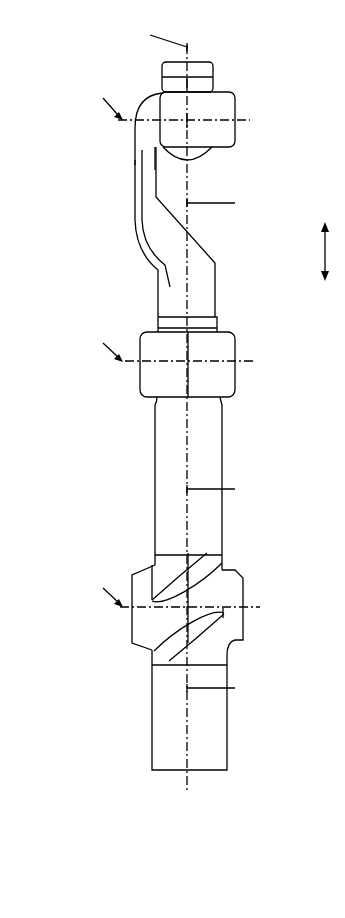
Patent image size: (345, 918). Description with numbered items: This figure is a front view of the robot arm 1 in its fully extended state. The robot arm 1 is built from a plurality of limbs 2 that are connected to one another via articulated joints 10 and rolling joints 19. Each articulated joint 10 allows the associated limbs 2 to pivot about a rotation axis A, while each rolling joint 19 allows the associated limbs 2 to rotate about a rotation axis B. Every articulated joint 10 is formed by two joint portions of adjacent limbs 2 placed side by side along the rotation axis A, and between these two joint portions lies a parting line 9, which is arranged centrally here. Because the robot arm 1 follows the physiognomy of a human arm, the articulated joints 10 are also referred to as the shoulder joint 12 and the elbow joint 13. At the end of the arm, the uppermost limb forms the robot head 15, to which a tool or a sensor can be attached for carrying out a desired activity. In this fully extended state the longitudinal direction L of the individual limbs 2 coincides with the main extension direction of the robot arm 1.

The robot arm 1 is at (78, 432).
The limb 2 is at (223, 102).
The parting line 9 is at (190, 382).
The articulated joint 10 is at (238, 496).
The shoulder joint 12 is at (262, 593).
The elbow joint 13 is at (252, 373).
The robot head 15 is at (217, 98).
The rolling joint 19 is at (233, 298).